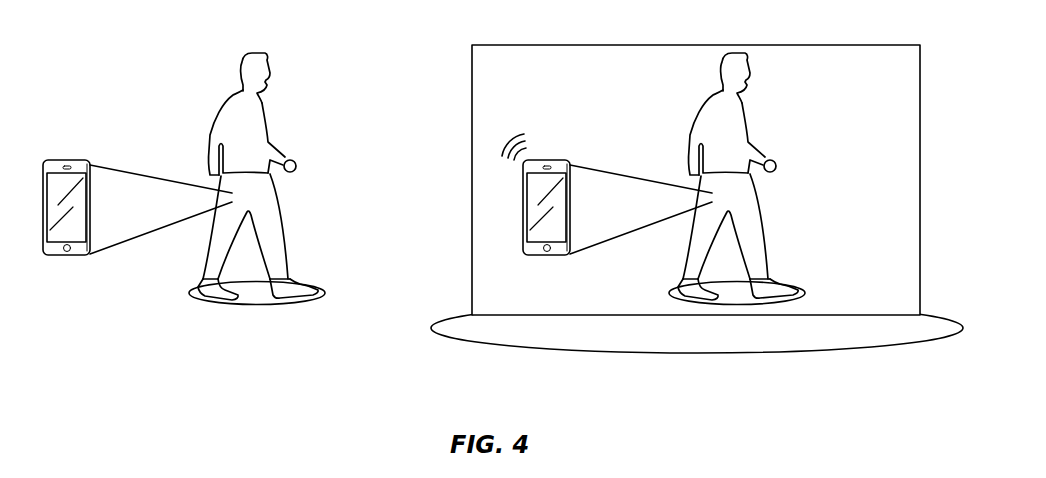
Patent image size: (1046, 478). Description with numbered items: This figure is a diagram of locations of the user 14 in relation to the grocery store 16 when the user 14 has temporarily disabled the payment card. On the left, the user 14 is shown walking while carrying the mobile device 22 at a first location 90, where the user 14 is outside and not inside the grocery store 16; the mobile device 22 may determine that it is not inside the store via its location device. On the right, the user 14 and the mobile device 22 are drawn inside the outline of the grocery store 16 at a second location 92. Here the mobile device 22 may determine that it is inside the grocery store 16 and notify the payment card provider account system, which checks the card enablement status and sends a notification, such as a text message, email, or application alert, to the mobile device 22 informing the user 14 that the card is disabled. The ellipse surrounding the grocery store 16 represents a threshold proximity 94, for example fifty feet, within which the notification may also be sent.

The user 14 is at (223, 99).
The grocery store 16 is at (707, 45).
The mobile device 22 is at (68, 160).
The first location 90 is at (323, 289).
The second location 92 is at (803, 289).
The threshold proximity 94 is at (707, 353).